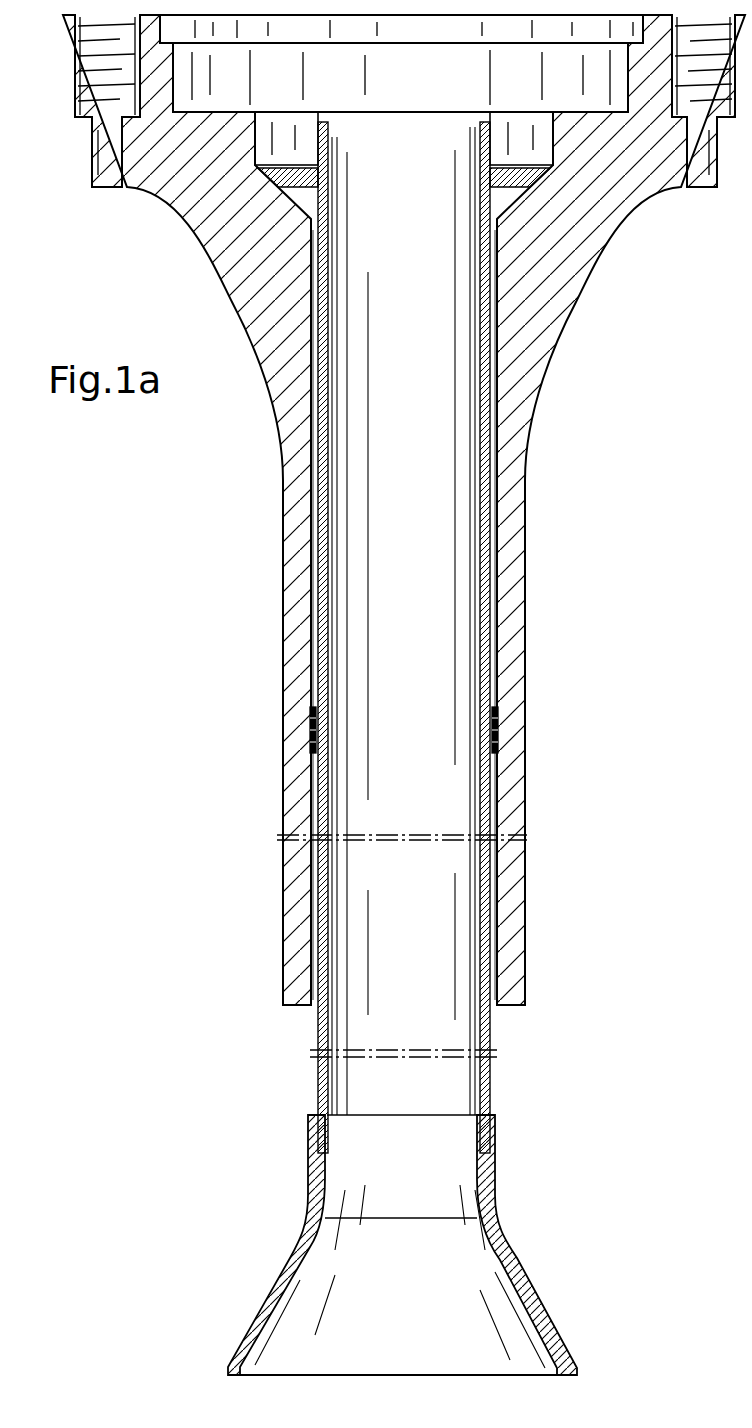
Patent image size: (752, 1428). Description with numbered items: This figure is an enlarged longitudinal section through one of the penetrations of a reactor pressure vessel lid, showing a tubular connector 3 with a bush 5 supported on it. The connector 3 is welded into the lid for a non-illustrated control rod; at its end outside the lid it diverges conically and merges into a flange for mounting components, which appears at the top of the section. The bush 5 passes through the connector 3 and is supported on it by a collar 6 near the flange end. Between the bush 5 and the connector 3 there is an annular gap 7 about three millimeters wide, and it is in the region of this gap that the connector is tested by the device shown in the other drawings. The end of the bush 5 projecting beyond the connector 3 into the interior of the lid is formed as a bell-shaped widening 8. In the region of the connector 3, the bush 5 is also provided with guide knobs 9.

The tubular connector 3 is at (582, 252).
The bush 5 is at (488, 413).
The collar 6 is at (530, 183).
The annular gap 7 is at (493, 555).
The bell-shaped widening 8 is at (522, 1278).
The guide knobs 9 is at (493, 727).